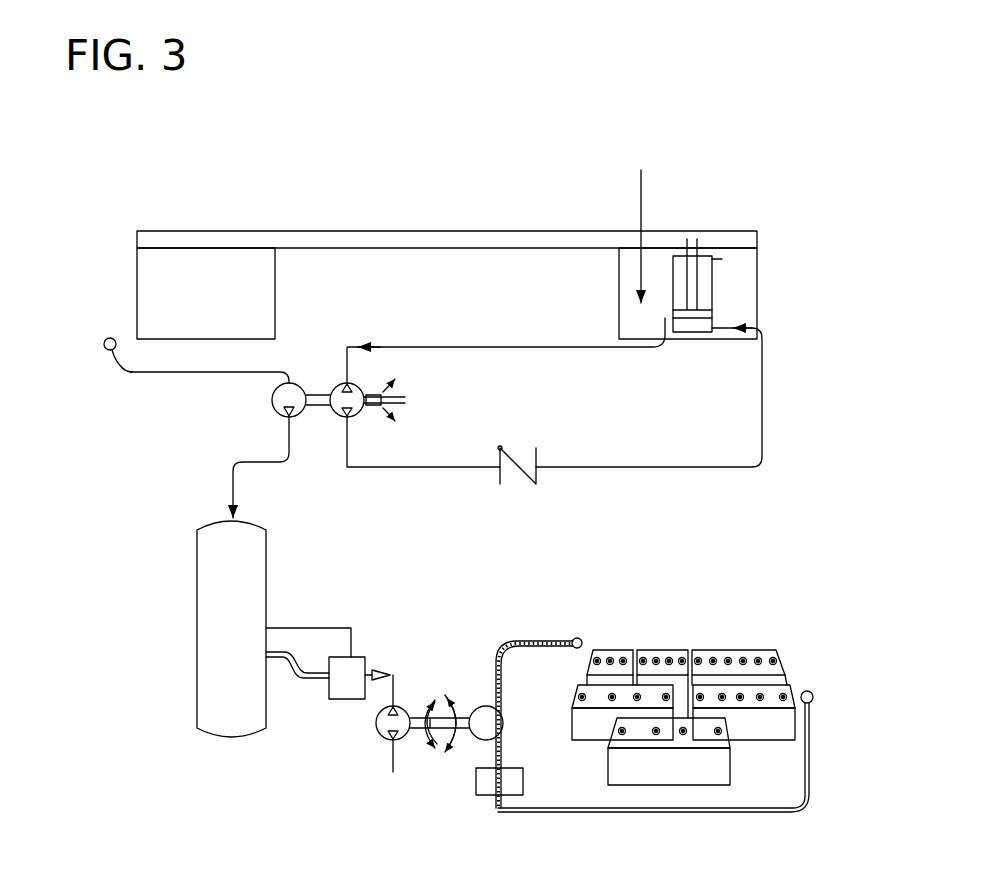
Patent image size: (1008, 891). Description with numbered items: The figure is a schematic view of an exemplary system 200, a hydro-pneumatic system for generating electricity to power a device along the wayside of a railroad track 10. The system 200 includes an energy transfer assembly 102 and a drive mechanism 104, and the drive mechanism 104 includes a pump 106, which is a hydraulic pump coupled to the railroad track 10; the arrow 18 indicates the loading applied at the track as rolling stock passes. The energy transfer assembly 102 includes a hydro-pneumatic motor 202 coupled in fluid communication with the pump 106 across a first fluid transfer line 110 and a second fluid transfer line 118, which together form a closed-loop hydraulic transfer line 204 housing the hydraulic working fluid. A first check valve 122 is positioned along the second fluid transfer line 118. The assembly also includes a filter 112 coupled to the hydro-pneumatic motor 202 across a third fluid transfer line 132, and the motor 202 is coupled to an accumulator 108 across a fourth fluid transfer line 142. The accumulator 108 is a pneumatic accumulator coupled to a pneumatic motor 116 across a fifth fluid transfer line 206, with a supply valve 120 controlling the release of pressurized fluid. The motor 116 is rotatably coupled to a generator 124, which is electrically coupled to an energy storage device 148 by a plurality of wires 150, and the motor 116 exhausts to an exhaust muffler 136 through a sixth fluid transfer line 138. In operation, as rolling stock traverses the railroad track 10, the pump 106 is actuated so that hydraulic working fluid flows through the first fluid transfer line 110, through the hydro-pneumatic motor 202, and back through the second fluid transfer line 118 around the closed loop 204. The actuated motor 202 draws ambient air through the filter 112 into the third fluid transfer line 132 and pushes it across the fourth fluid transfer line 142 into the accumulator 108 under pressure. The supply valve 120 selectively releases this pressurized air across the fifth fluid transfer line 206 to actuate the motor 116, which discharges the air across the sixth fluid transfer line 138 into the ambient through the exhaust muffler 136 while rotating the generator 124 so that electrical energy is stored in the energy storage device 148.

The system 200 is at (739, 95).
The railroad track 10 is at (211, 216).
The load direction 18 is at (642, 183).
The pump 106 is at (673, 272).
The drive mechanism 104 is at (720, 282).
The first fluid transfer line 110 is at (451, 347).
The second fluid transfer line 118 is at (623, 468).
The closed-loop hydraulic transfer line 204 is at (469, 359).
The first check valve 122 is at (516, 488).
The filter 112 is at (104, 345).
The third fluid transfer line 132 is at (205, 374).
The hydro-pneumatic motor 202 is at (315, 383).
The energy transfer assembly 102 is at (174, 493).
The fourth fluid transfer line 142 is at (236, 485).
The accumulator 108 is at (196, 555).
The supply valve 120 is at (361, 656).
The fifth fluid transfer line 206 is at (408, 657).
The motor 116 is at (440, 764).
The sixth fluid transfer line 138 is at (498, 648).
The exhaust muffler 136 is at (580, 638).
The generator 124 is at (515, 768).
The wires 150 is at (648, 813).
The energy storage device 148 is at (811, 690).